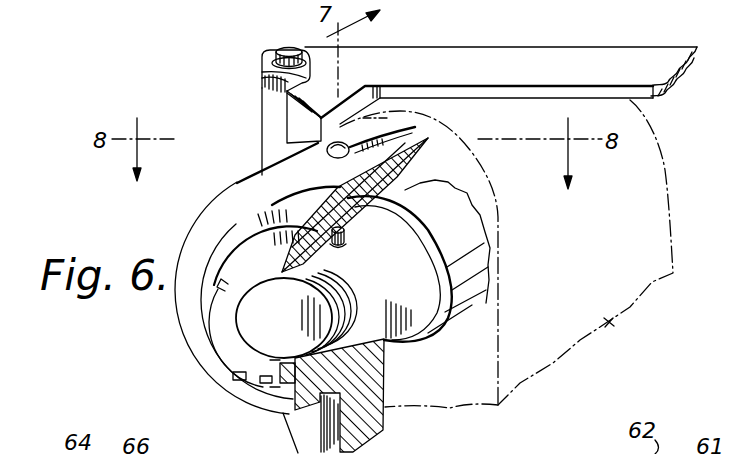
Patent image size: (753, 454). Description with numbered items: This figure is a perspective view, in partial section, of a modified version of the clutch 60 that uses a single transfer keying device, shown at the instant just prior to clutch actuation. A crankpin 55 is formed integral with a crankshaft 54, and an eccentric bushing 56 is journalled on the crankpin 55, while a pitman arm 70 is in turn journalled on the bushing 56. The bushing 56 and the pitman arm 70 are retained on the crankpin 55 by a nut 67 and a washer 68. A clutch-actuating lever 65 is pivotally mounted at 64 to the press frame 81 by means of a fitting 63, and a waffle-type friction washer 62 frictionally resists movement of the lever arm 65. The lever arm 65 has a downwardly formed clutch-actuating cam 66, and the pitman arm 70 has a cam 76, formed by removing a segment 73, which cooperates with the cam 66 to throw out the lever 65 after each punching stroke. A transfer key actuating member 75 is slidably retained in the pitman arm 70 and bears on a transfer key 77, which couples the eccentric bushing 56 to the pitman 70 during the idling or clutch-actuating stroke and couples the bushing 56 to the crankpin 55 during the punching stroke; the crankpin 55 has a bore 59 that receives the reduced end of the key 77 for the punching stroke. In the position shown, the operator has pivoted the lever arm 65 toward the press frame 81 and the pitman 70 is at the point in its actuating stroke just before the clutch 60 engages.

The crankshaft 54 is at (460, 243).
The crankpin 55 is at (428, 322).
The eccentric bushing 56 is at (467, 197).
The bore 59 is at (338, 247).
The clutch 60 is at (218, 229).
The waffle-type friction washer 62 is at (264, 85).
The fitting 63 is at (267, 99).
The pivot 64 is at (288, 47).
The clutch-actuating lever 65 is at (563, 32).
The clutch-actuating cam 66 is at (292, 122).
The nut 67 is at (225, 323).
The washer 68 is at (267, 240).
The pitman arm 70 is at (380, 431).
The segment 73 is at (400, 175).
The transfer key actuating member 75 is at (340, 158).
The cam 76 is at (387, 118).
The transfer key 77 is at (350, 230).
The press frame 81 is at (612, 322).